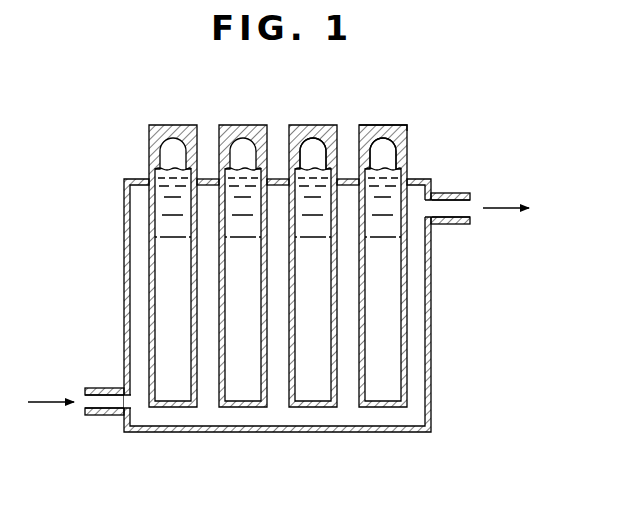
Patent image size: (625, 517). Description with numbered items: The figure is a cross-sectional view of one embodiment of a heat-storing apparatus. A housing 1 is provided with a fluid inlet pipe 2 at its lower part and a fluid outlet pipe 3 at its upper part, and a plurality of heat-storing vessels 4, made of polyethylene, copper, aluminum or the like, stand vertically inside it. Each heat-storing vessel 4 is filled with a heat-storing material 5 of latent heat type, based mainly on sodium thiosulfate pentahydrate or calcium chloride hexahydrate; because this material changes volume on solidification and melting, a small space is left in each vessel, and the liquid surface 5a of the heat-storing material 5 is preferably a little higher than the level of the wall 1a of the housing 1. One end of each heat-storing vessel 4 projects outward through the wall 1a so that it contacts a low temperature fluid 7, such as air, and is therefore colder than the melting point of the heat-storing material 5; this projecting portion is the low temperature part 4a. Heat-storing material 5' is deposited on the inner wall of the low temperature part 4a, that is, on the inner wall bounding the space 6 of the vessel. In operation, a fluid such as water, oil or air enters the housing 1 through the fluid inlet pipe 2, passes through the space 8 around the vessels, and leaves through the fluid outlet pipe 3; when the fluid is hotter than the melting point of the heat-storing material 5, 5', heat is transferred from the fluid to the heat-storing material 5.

The housing 1 is at (278, 256).
The wall of housing 1a is at (140, 179).
The fluid inlet pipe 2 is at (98, 388).
The fluid outlet pipe 3 is at (450, 193).
The heat-storing vessel 4 is at (125, 233).
The low temperature part 4a is at (398, 127).
The heat-storing material 5 is at (403, 266).
The heat-storing material deposited on inner wall 5' is at (381, 133).
The liquid surface 5a is at (385, 173).
The space 6 is at (314, 142).
The low temperature fluid 7 is at (210, 108).
The space in housing 8 is at (204, 293).